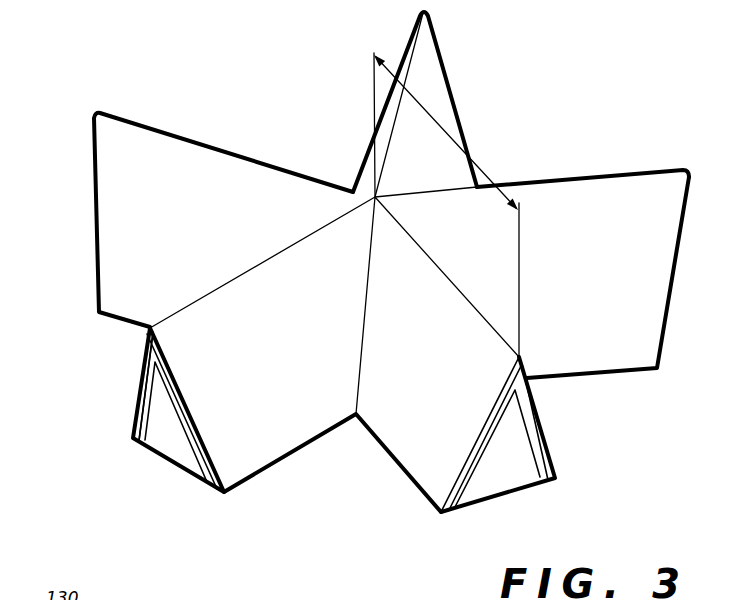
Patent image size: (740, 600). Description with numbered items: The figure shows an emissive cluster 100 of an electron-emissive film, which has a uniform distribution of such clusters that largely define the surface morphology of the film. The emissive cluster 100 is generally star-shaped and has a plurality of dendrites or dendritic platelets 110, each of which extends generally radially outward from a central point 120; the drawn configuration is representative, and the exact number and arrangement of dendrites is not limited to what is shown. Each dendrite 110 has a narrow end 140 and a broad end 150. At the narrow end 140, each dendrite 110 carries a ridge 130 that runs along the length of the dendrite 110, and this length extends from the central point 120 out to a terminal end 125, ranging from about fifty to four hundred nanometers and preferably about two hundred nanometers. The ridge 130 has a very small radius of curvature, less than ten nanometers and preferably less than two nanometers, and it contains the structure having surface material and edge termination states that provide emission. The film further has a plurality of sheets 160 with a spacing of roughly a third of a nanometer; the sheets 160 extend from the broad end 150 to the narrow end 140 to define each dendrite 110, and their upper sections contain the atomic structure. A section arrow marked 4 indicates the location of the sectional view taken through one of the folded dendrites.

The emissive cluster 100 is at (382, 278).
The dendrite 110 is at (382, 262).
The central point 120 is at (373, 185).
The terminal end 125 is at (520, 357).
The ridge 130 is at (575, 182).
The narrow end 140 is at (148, 335).
The broad end 150 is at (512, 493).
The sheets 160 is at (140, 400).
The section arrow 4 is at (160, 462).